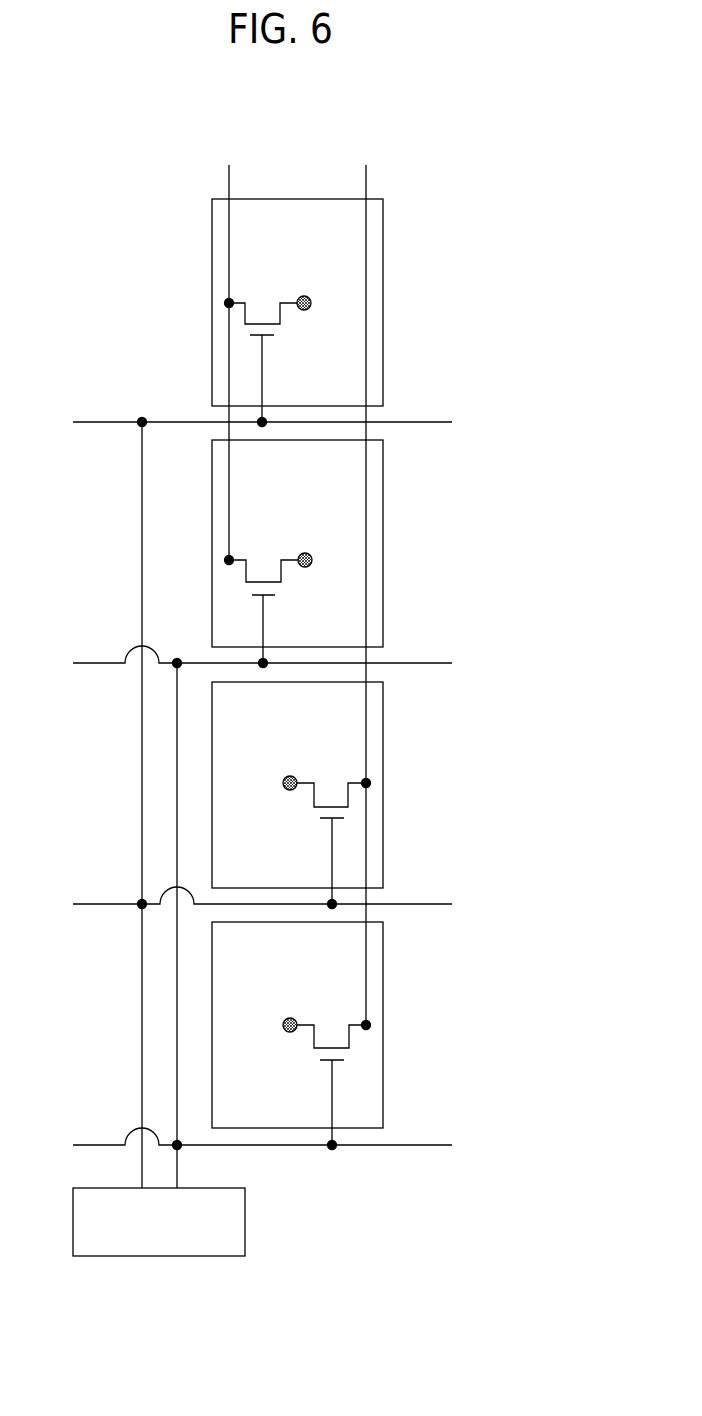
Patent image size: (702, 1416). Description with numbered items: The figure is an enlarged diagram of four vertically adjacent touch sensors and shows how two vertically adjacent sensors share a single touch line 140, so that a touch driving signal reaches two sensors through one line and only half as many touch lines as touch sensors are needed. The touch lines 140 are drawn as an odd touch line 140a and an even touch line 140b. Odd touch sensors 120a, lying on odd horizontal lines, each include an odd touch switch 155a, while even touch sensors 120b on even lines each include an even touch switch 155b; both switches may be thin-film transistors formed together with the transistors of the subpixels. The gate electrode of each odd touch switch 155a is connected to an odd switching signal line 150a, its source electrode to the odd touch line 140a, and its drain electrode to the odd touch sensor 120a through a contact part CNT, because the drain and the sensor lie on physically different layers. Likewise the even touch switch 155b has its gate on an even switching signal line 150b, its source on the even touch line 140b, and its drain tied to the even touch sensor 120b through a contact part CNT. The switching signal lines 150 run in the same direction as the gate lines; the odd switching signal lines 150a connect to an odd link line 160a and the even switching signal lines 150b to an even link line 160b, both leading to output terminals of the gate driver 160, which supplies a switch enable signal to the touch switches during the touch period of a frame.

The touch line 140 is at (297, 570).
The odd touch line 140a is at (229, 182).
The even touch line 140b is at (366, 182).
The odd touch sensor 120a is at (383, 298).
The even touch sensor 120b is at (383, 540).
The odd touch switch 155a is at (282, 318).
The even touch switch 155b is at (283, 578).
The contact part CNT is at (308, 296).
The switching signal lines 150 is at (492, 390).
The odd switching signal line 150a is at (440, 421).
The even switching signal line 150b is at (440, 662).
The gate driver 160 is at (177, 1236).
The odd link line 160a is at (142, 1013).
The even link line 160b is at (177, 1083).